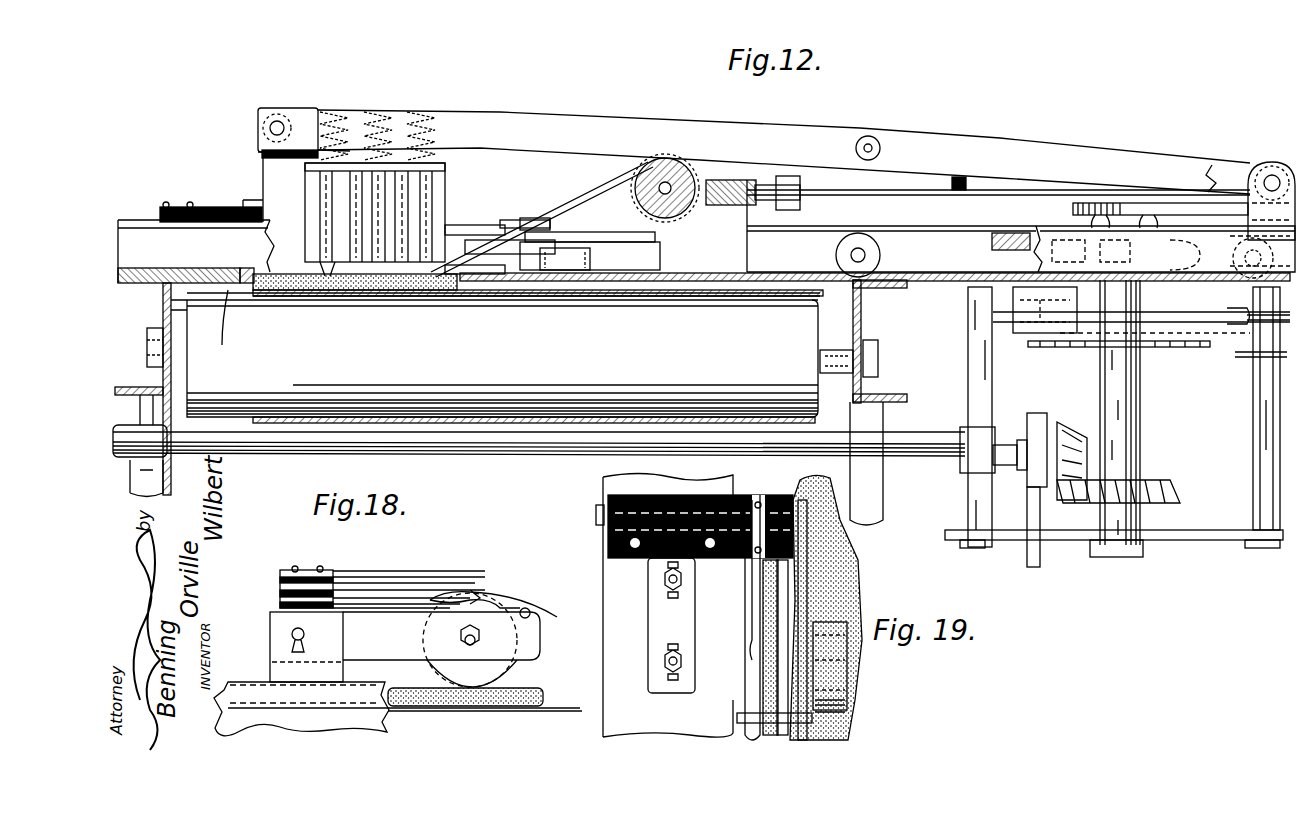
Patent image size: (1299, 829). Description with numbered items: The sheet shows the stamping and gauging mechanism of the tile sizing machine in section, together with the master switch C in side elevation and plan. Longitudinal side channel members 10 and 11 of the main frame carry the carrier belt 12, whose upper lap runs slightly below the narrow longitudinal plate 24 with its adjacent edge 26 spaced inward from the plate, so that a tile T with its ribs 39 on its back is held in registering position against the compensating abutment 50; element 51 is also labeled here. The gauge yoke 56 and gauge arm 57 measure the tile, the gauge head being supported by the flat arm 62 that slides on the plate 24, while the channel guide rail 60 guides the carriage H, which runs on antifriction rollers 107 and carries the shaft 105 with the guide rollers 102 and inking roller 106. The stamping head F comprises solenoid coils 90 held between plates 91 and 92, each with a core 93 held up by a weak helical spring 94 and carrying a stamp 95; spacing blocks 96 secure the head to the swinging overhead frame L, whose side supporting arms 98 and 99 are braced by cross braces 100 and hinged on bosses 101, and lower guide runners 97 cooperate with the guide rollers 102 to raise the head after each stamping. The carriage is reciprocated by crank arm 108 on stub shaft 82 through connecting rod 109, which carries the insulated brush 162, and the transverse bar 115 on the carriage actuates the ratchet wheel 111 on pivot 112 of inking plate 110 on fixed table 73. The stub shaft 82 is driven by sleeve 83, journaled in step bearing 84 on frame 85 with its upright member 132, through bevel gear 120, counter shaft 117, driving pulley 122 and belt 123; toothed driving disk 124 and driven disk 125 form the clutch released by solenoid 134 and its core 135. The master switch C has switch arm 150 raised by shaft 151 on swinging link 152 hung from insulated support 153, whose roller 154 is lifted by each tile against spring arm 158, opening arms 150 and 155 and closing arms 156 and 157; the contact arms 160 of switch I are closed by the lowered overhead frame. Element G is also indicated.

In FIG. 12, the side channel member 10 is at (162, 306).
In FIG. 12, the side channel member 11 is at (862, 322).
In FIG. 12, the endless belt 12 is at (694, 302).
In FIG. 12, the narrow longitudinal plate 24 is at (160, 262).
In FIG. 18, the narrow longitudinal plate 24 is at (387, 702).
In FIG. 19, the narrow longitudinal plate 24 is at (668, 606).
In FIG. 12, the adjacent edge of the carrier belt 26 is at (240, 284).
In FIG. 12, the ribs 39 is at (418, 284).
In FIG. 12, the compensating abutment 50 is at (200, 325).
In FIG. 12, the block 51 is at (232, 282).
In FIG. 12, the gauge yoke 56 is at (560, 288).
In FIG. 12, the gauge arm 57 is at (780, 290).
In FIG. 12, the channel guide rail 60 is at (1021, 252).
In FIG. 12, the flat supporting arm 62 is at (500, 282).
In FIG. 12, the fixed table 73 is at (585, 259).
In FIG. 12, the vertical stub shaft 82 is at (1142, 298).
In FIG. 12, the vertical sleeve shaft 83 is at (1142, 437).
In FIG. 12, the step bearing 84 is at (1140, 556).
In FIG. 12, the appended frame 85 is at (1215, 540).
In FIG. 12, the electrical solenoid coil 90 is at (440, 198).
In FIG. 12, the upper horizontal plate 91 is at (440, 170).
In FIG. 12, the lower horizontal plate 92 is at (420, 240).
In FIG. 12, the core 93 is at (262, 160).
In FIG. 12, the weak helical spring 94 is at (318, 150).
In FIG. 12, the printing type or stamp 95 is at (332, 280).
In FIG. 12, the spacing block 96 is at (306, 208).
In FIG. 12, the lower guide runner 97 is at (598, 186).
In FIG. 12, the side supporting arm 98 is at (772, 122).
In FIG. 12, the side supporting arm 99 is at (482, 112).
In FIG. 12, the cross brace 100 is at (262, 118).
In FIG. 12, the boss 101 is at (1270, 164).
In FIG. 12, the guide roller 102 is at (640, 196).
In FIG. 12, the shaft 105 is at (672, 170).
In FIG. 12, the inking roller 106 is at (660, 165).
In FIG. 12, the antifriction roller 107 is at (836, 252).
In FIG. 12, the crank arm 108 is at (1145, 203).
In FIG. 12, the connecting rod 109 is at (950, 198).
In FIG. 12, the inking plate 110 is at (560, 216).
In FIG. 12, the main ratchet wheel 111 is at (660, 232).
In FIG. 12, the pivot 112 is at (500, 252).
In FIG. 12, the transverse bar 115 is at (1008, 232).
In FIG. 12, the counter shaft 117 is at (935, 460).
In FIG. 12, the bevel gear 120 is at (1172, 492).
In FIG. 12, the driving pulley 122 is at (1032, 418).
In FIG. 12, the belt 123 is at (1036, 556).
In FIG. 12, the toothed driving disk 124 is at (1185, 350).
In FIG. 12, the driven disk 125 is at (1225, 340).
In FIG. 12, the upright member 132 is at (1252, 448).
In FIG. 12, the solenoid 134 is at (1032, 320).
In FIG. 12, the propelling core 135 is at (992, 316).
In FIG. 18, the switch arm 150 is at (505, 598).
In FIG. 19, the switch arm 150 is at (758, 730).
In FIG. 18, the shaft 151 is at (531, 611).
In FIG. 19, the shaft 151 is at (830, 695).
In FIG. 18, the swinging link 152 is at (441, 640).
In FIG. 19, the swinging link 152 is at (800, 588).
In FIG. 18, the insulated support 153 is at (282, 574).
In FIG. 19, the insulated support 153 is at (790, 494).
In FIG. 18, the roller 154 is at (505, 675).
In FIG. 19, the roller 154 is at (836, 706).
In FIG. 18, the switch arm 155 is at (392, 612).
In FIG. 18, the switch arm 156 is at (458, 572).
In FIG. 19, the switch arm 156 is at (745, 626).
In FIG. 18, the switch arm 157 is at (390, 578).
In FIG. 19, the spring arm 158 is at (802, 628).
In FIG. 12, the contact arms 160 is at (260, 184).
In FIG. 12, the insulated brush 162 is at (966, 168).
In FIG. 18, the master switch C is at (333, 570).
In FIG. 19, the master switch C is at (606, 500).
In FIG. 12, the stamping head F is at (315, 188).
In FIG. 12, the guide G is at (474, 284).
In FIG. 12, the carriage H is at (633, 226).
In FIG. 12, the spring switch I is at (163, 207).
In FIG. 12, the overhead frame L is at (547, 112).
In FIG. 12, the tile T is at (305, 300).
In FIG. 18, the tile T is at (496, 702).
In FIG. 19, the tile T is at (846, 604).